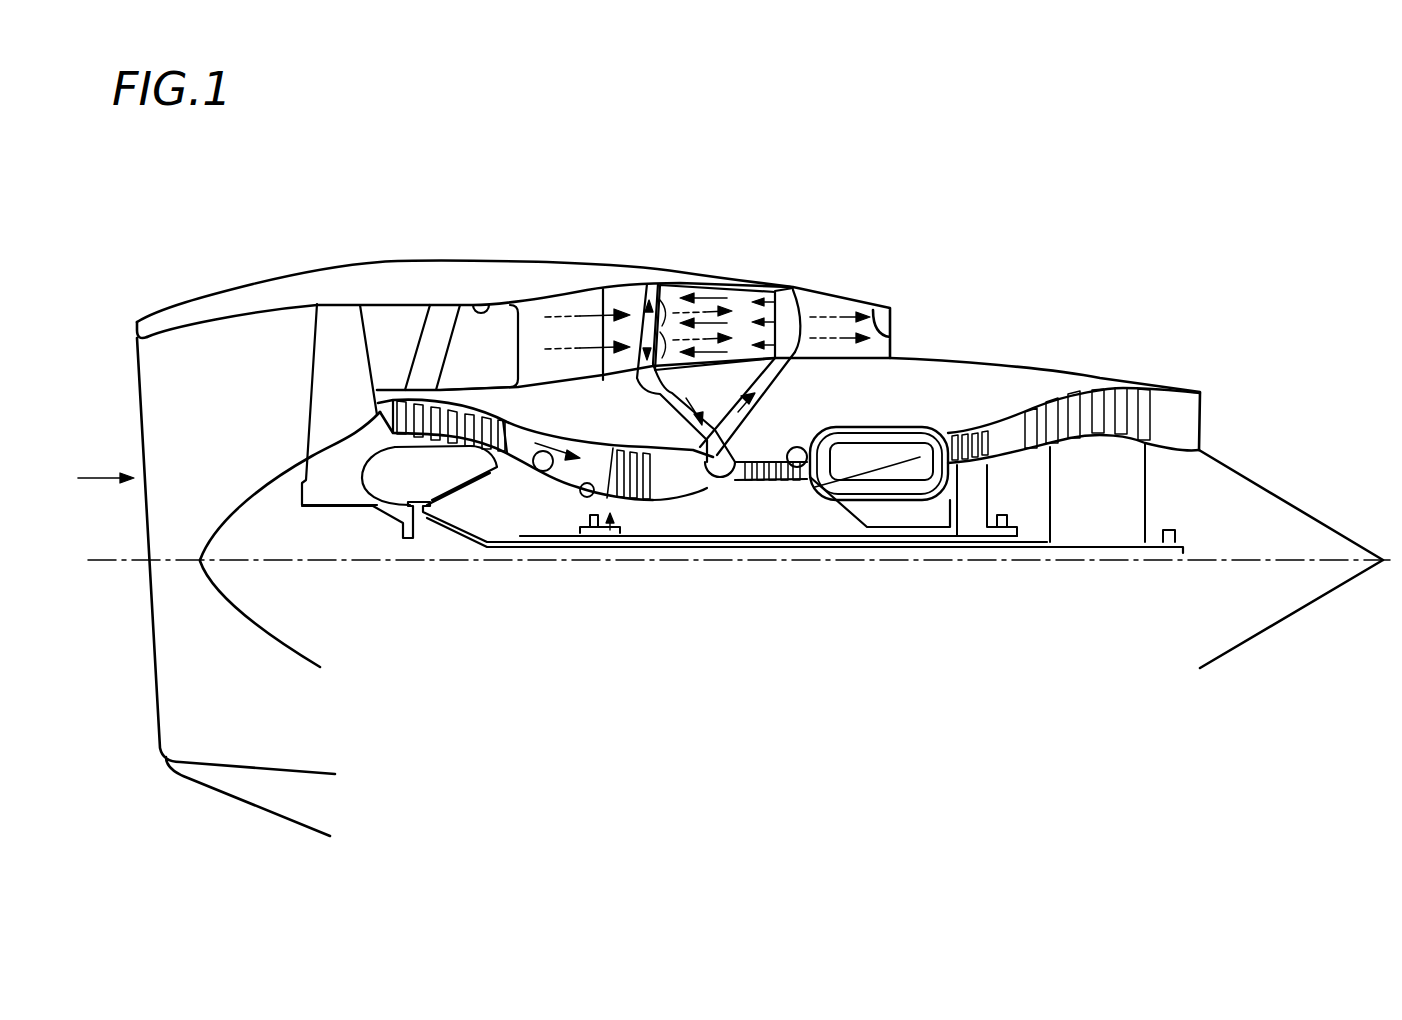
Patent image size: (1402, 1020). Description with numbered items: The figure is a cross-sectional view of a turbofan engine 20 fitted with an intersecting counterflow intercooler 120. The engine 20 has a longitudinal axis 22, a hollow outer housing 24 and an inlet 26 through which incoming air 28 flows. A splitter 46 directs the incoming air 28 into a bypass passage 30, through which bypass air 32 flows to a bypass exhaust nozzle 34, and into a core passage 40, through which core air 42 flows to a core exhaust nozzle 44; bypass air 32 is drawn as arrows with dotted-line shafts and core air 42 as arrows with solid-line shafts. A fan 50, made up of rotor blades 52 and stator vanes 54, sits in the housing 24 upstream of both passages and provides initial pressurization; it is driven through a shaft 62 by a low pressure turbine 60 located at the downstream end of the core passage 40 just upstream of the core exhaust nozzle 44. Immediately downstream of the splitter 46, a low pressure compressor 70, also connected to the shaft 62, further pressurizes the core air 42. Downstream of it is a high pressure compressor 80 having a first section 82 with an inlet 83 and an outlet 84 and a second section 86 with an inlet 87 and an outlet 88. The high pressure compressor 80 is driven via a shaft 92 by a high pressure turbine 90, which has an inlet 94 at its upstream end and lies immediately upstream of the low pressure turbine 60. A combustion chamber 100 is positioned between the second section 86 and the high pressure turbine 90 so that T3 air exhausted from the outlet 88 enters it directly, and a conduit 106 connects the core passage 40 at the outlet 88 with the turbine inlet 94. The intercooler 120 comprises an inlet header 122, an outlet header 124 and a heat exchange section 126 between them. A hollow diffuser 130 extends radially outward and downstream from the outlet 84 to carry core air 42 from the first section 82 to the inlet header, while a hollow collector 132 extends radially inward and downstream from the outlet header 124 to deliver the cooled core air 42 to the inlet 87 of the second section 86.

The turbofan engine 20 is at (350, 228).
The longitudinal axis 22 is at (112, 561).
The hollow outer housing 24 is at (183, 304).
The inlet 26 is at (137, 332).
The incoming air 28 is at (90, 476).
The bypass passage 30 is at (477, 303).
The bypass air 32 is at (580, 316).
The bypass exhaust nozzle 34 is at (893, 337).
The core passage 40 is at (463, 448).
The core air 42 is at (707, 293).
The core exhaust nozzle 44 is at (1200, 402).
The splitter 46 is at (351, 444).
The fan 50 is at (305, 355).
The rotor blades 52 is at (343, 333).
The stator vanes 54 is at (442, 330).
The low pressure turbine 60 is at (1120, 412).
The shaft 62 is at (1043, 550).
The low pressure compressor 70 is at (455, 440).
The high pressure compressor 80 is at (613, 470).
The first section 82 is at (610, 534).
The inlet 83 is at (545, 472).
The outlet 84 is at (695, 452).
The second section 86 is at (790, 482).
The inlet 87 is at (723, 478).
The outlet 88 is at (802, 468).
The high pressure turbine 90 is at (975, 433).
The shaft 92 is at (890, 536).
The inlet 94 is at (938, 433).
The combustion chamber 100 is at (885, 428).
The conduit 106 is at (930, 493).
The counterflow intercooler 120 is at (792, 289).
The inlet header 122 is at (789, 335).
The outlet header 124 is at (640, 373).
The heat exchange section 126 is at (733, 313).
The diffuser 130 is at (785, 392).
The collector 132 is at (680, 397).